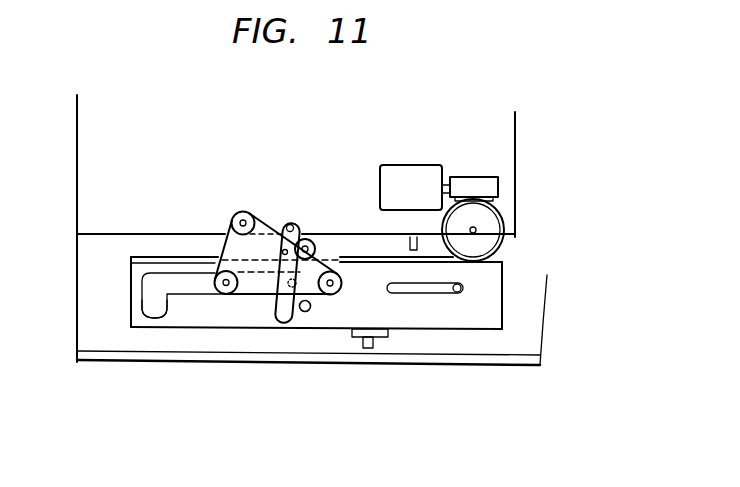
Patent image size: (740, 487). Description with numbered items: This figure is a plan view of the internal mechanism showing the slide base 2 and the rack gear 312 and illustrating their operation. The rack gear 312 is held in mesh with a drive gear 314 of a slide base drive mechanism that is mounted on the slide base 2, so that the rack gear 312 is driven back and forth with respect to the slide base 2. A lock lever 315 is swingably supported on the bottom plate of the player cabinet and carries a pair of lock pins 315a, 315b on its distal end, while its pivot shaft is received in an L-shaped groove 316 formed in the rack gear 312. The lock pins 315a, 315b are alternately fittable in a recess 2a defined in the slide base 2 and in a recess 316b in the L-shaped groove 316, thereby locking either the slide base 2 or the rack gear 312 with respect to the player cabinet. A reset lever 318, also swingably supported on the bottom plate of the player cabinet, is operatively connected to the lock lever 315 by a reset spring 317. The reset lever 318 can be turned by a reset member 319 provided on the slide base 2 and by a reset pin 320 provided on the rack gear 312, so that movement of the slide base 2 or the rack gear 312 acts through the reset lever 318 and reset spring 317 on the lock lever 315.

The slide base 2 is at (502, 147).
The recess 2a is at (227, 230).
The rack gear 312 is at (493, 305).
The drive gear 314 is at (490, 223).
The lock lever 315 is at (262, 250).
The lock pin 315a is at (243, 218).
The lock pin 315b is at (226, 294).
The L-shaped groove 316 is at (188, 286).
The recess 316b is at (145, 320).
The reset spring 317 is at (300, 238).
The reset lever 318 is at (287, 326).
The reset member 319 is at (408, 243).
The reset pin 320 is at (307, 312).